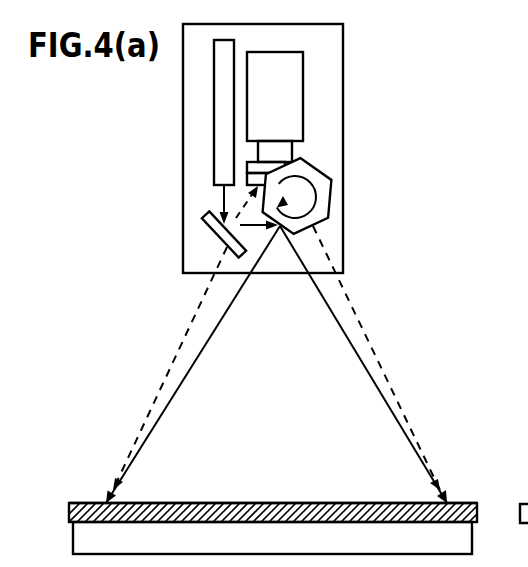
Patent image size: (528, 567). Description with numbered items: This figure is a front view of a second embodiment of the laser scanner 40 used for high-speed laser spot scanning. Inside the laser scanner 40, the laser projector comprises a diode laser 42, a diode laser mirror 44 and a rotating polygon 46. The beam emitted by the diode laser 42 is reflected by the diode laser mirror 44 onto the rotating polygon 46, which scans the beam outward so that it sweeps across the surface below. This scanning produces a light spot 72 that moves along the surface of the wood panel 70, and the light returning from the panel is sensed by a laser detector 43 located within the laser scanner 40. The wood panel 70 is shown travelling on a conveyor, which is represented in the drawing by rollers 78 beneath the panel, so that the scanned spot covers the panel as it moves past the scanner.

The laser scanner 40 is at (343, 53).
The diode laser 42 is at (183, 117).
The laser detector 43 is at (303, 116).
The diode laser mirror 44 is at (204, 221).
The rotating polygon 46 is at (331, 197).
The wood panel 70 is at (223, 512).
The light spot 72 is at (448, 503).
The rollers 78 is at (328, 540).